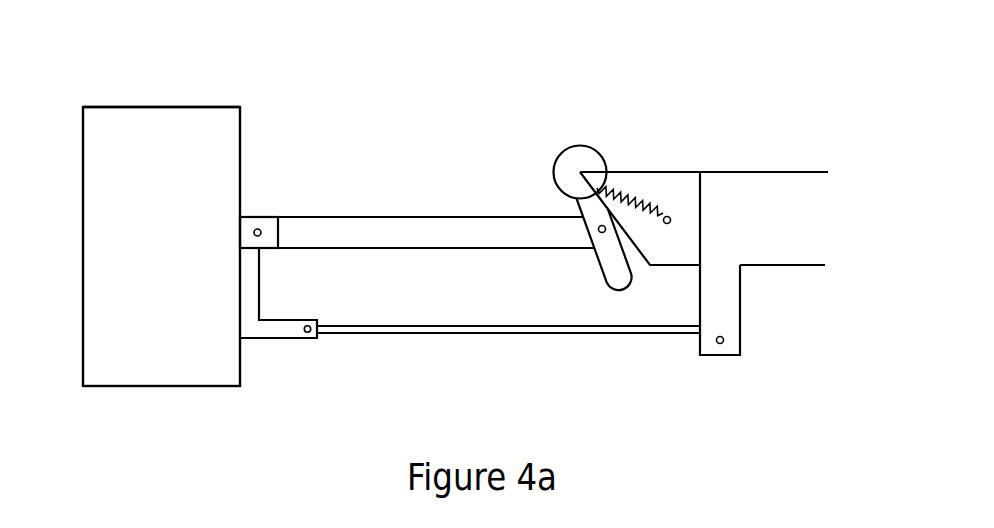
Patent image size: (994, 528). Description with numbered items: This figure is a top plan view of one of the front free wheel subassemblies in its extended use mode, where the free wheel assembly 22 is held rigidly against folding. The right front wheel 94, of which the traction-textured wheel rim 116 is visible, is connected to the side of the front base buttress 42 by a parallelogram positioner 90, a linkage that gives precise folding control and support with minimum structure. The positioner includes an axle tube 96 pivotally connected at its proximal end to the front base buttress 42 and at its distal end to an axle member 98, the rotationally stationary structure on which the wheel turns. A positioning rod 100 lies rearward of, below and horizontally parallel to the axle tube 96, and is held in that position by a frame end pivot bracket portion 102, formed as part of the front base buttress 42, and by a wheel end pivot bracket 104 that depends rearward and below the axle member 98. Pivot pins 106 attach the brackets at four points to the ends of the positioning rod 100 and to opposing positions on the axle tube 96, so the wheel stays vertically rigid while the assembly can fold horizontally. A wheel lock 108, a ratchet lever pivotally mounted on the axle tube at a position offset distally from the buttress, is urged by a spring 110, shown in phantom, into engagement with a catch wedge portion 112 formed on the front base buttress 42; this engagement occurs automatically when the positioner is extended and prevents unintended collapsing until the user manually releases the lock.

The free wheel assembly 22 is at (440, 100).
The front base buttress 42 is at (803, 235).
The parallelogram positioner 90 is at (497, 286).
The right front wheel 94 is at (90, 267).
The axle tube 96 is at (413, 223).
The axle member 98 is at (269, 240).
The positioning rod 100 is at (595, 337).
The frame end pivot bracket portion 102 is at (730, 293).
The wheel end pivot bracket 104 is at (263, 332).
The pivot pins 106 is at (259, 222).
The wheel lock 108 is at (563, 162).
The spring 110 is at (652, 202).
The catch wedge portion 112 is at (650, 180).
The wheel rim 116 is at (140, 117).